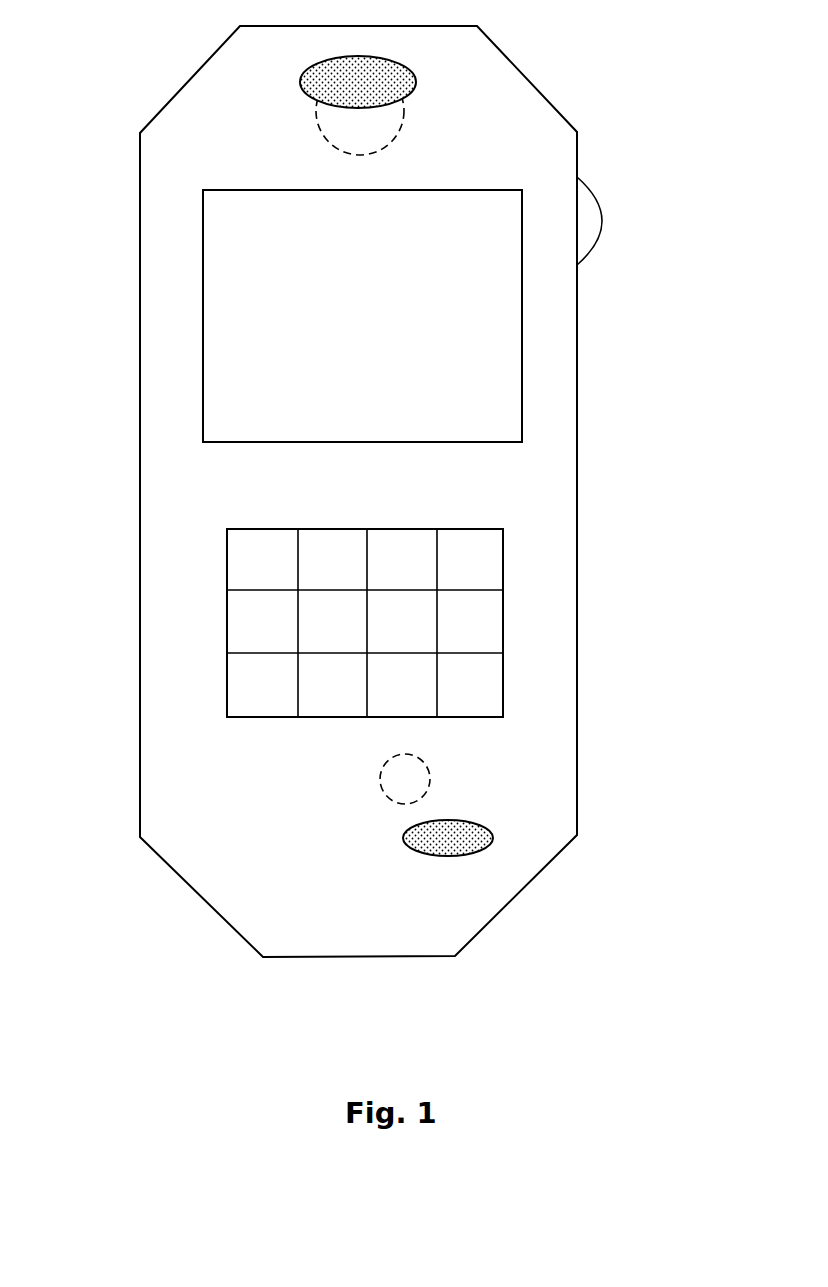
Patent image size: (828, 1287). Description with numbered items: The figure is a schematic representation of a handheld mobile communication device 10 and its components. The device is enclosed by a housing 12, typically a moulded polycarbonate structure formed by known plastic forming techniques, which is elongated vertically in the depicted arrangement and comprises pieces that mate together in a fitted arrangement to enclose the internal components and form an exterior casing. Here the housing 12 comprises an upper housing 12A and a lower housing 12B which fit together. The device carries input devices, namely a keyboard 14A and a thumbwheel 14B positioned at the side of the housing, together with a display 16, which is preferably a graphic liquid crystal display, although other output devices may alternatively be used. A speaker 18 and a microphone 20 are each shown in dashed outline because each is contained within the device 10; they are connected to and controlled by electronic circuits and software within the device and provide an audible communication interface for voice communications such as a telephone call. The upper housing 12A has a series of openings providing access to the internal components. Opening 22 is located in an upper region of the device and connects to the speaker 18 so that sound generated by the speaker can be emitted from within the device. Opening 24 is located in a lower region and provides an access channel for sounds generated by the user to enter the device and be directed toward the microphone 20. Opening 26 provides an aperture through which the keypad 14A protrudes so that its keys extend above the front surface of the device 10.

The handheld mobile communication device 10 is at (175, 905).
The housing 12 is at (583, 655).
The upper housing 12A is at (433, 932).
The lower housing 12B is at (358, 491).
The keyboard 14A is at (340, 528).
The thumbwheel 14B is at (603, 197).
The display 16 is at (503, 392).
The speaker 18 is at (303, 117).
The microphone 20 is at (367, 779).
The opening 22 is at (396, 66).
The opening 24 is at (462, 838).
The opening 26 is at (508, 628).